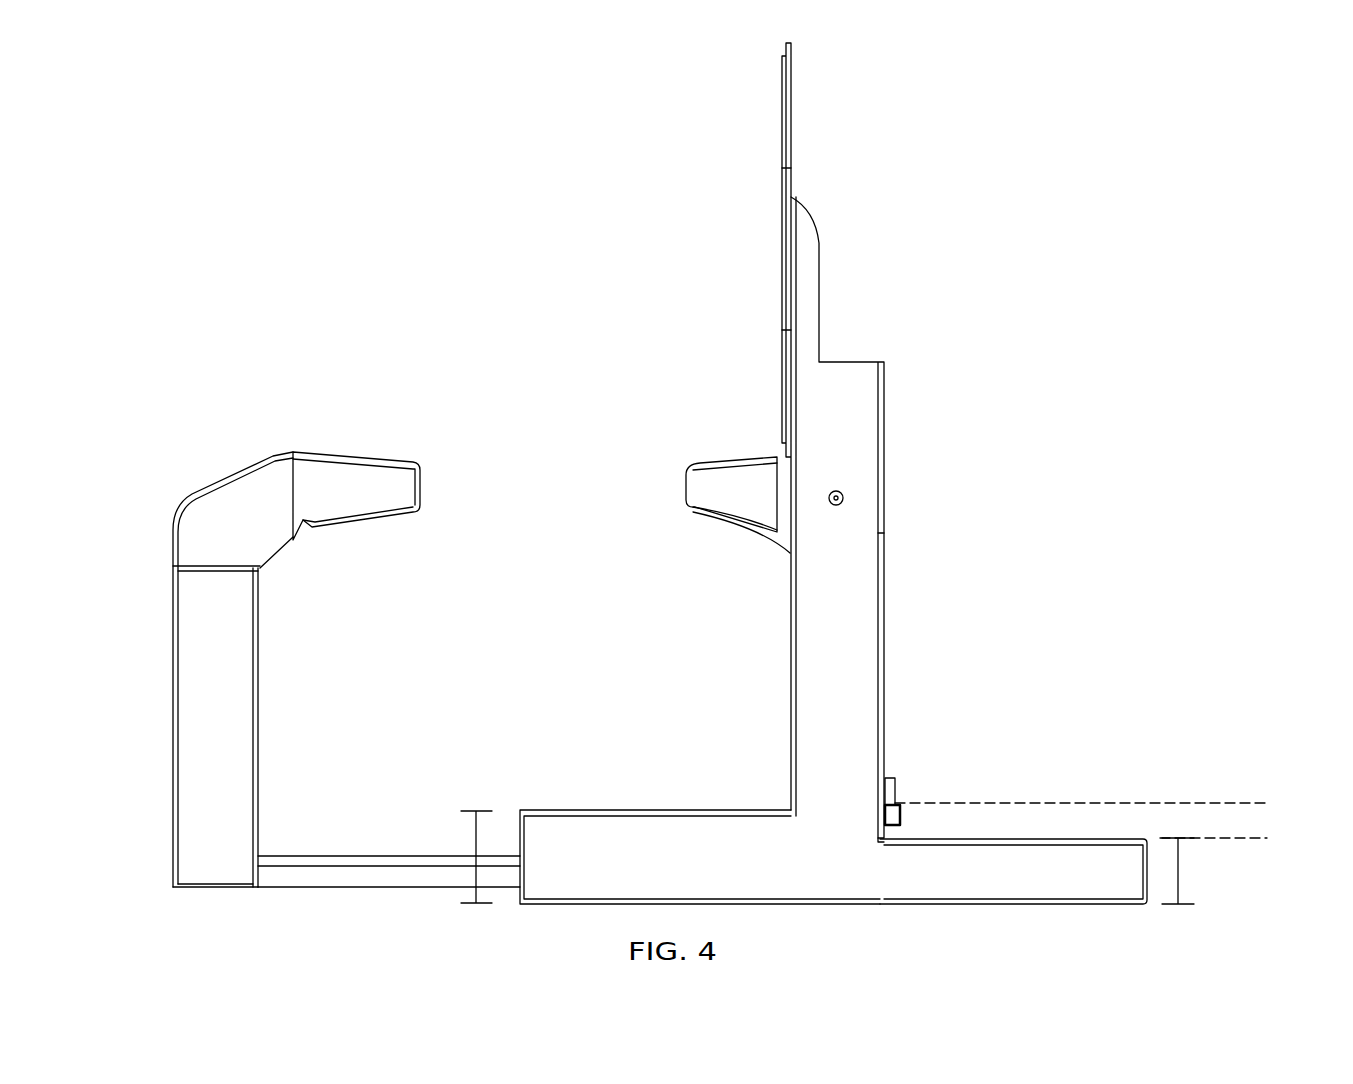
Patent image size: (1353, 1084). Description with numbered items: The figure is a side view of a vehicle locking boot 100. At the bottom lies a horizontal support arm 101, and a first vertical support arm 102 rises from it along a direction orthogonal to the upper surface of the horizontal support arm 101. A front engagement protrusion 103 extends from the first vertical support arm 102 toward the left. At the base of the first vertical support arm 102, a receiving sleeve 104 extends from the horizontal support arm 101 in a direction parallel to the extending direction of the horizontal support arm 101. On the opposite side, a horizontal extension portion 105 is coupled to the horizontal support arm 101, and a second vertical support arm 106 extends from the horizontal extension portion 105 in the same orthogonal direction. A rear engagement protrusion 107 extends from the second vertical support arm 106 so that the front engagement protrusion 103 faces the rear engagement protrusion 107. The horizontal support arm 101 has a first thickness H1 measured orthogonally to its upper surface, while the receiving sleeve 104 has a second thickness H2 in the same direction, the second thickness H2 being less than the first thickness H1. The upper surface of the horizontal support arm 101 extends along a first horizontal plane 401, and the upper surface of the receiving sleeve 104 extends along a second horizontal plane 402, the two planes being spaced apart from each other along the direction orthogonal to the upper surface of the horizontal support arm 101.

The vehicle locking boot 100 is at (157, 181).
The horizontal support arm 101 is at (597, 848).
The first vertical support arm 102 is at (862, 468).
The front engagement protrusion 103 is at (707, 480).
The receiving sleeve 104 is at (1013, 863).
The horizontal extension portion 105 is at (303, 878).
The second vertical support arm 106 is at (209, 683).
The rear engagement protrusion 107 is at (370, 483).
The first horizontal plane 401 is at (1137, 803).
The second horizontal plane 402 is at (1250, 838).
The first thickness H1 is at (476, 832).
The second thickness H2 is at (1178, 872).